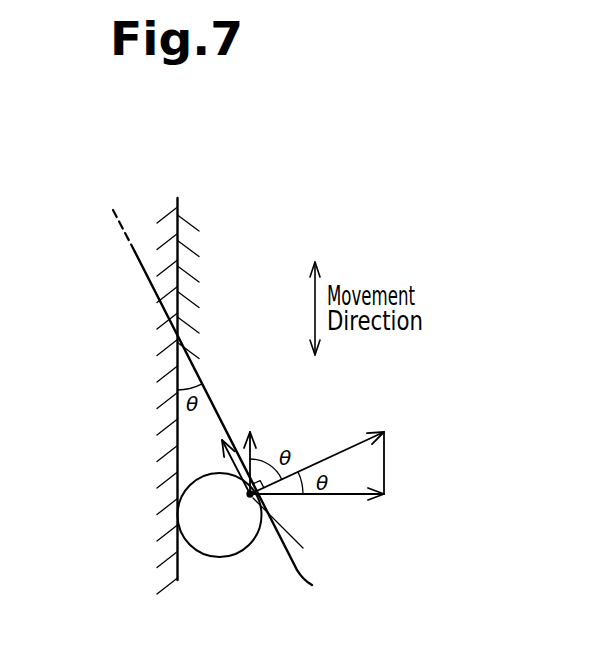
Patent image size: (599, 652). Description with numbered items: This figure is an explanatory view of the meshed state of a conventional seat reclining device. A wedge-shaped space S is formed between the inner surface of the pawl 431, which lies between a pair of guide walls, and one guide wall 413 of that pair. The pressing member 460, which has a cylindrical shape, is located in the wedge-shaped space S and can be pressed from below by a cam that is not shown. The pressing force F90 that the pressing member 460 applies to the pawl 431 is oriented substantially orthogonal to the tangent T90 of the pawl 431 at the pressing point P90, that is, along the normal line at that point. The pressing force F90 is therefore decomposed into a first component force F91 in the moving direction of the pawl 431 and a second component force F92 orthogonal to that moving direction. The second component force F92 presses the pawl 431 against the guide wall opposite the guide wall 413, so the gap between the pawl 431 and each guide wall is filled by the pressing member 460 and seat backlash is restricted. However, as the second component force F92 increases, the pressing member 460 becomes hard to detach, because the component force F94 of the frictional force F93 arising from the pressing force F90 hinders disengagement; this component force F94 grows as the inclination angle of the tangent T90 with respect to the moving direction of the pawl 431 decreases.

The guide wall 413 is at (178, 227).
The tangent T90 is at (127, 232).
The pawl 431 is at (285, 323).
The pressing member 460 is at (192, 508).
The pressing point P90 is at (249, 497).
The pressing force F90 is at (348, 448).
The first component force F91 is at (386, 466).
The second component force F92 is at (347, 498).
The frictional force F93 is at (237, 470).
The component force of the frictional force F94 is at (252, 455).
The wedge-shaped space S is at (210, 452).